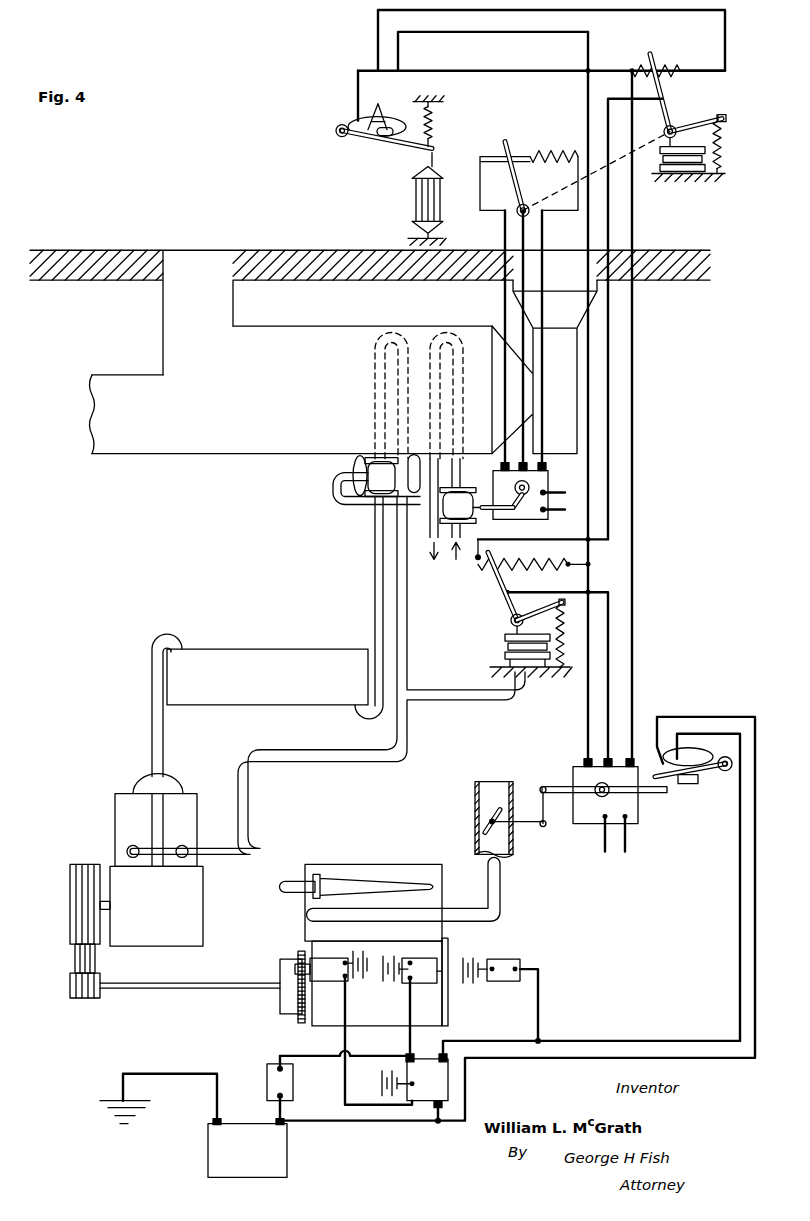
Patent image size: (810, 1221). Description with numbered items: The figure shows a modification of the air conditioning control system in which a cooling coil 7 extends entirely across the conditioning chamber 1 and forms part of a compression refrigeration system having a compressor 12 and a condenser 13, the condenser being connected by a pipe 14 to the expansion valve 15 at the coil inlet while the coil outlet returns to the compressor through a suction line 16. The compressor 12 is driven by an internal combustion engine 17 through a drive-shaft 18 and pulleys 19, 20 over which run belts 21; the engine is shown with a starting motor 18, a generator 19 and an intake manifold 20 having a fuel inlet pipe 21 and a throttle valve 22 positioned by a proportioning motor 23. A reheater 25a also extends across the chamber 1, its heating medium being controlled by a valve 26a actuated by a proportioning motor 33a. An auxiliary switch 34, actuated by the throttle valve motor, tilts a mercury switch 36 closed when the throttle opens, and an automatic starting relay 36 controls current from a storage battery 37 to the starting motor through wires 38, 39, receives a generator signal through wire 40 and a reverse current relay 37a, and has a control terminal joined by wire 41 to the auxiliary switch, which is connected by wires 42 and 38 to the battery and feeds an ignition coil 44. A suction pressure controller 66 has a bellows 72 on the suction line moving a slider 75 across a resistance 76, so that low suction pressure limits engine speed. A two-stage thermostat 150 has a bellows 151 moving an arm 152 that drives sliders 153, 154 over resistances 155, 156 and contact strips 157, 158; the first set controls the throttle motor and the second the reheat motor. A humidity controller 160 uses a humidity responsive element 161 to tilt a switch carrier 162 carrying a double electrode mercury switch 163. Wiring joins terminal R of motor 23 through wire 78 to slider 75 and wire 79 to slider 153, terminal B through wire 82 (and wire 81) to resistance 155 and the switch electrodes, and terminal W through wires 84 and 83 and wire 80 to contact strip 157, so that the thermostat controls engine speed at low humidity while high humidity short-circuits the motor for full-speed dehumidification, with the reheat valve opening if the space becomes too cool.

The conditioning chamber 1 is at (310, 330).
The cooling coil 7 is at (374, 385).
The compressor 12 is at (116, 808).
The condenser 13 is at (257, 633).
The pipe 14 is at (375, 582).
The expansion valve 15 is at (348, 468).
The suction line 16 is at (407, 600).
The internal combustion engine 17 is at (380, 845).
The drive-shaft and starting motor 18 is at (212, 988).
The pulley and generator 19 is at (78, 864).
The pulley and intake manifold 20 is at (70, 995).
The belts and fuel inlet pipe 21 is at (75, 962).
The throttle valve 22 is at (488, 821).
The proportioning motor 23 is at (564, 768).
The reheater 25a is at (458, 326).
The valve 26a is at (460, 487).
The proportioning motor 33a is at (558, 488).
The auxiliary switch 34 is at (712, 792).
The mercury switch and automatic starting relay 36 is at (690, 746).
The storage battery 37 is at (193, 1126).
The reverse current relay 37a is at (266, 1077).
The wire 38 is at (362, 1119).
The wire 39 is at (345, 1038).
The wire 40 is at (410, 1038).
The wire 41 is at (674, 1038).
The wire 42 is at (680, 1056).
The ignition coil 44 is at (512, 940).
The suction pressure controller 66 is at (480, 604).
The bellows 72 is at (503, 651).
The slider 75 is at (496, 585).
The resistance 76 is at (534, 554).
The wire 78 is at (608, 664).
The wire 79 is at (626, 436).
The wire 80 is at (512, 5).
The wire 81 is at (566, 61).
The wire 82 is at (630, 592).
The wire 83 is at (487, 29).
The wire 84 is at (588, 704).
The two-stage thermostat 150 is at (702, 192).
The bellows 151 is at (663, 160).
The arm 152 is at (718, 115).
The slider 153 is at (665, 83).
The slider 154 is at (540, 165).
The resistance 155 is at (670, 53).
The resistance 156 is at (562, 137).
The contact strip 157 is at (709, 62).
The contact strip 158 is at (490, 147).
The humidity controller 160 is at (350, 162).
The humidity responsive element 161 is at (416, 197).
The switch carrier 162 is at (352, 138).
The mercury switch 163 is at (352, 112).